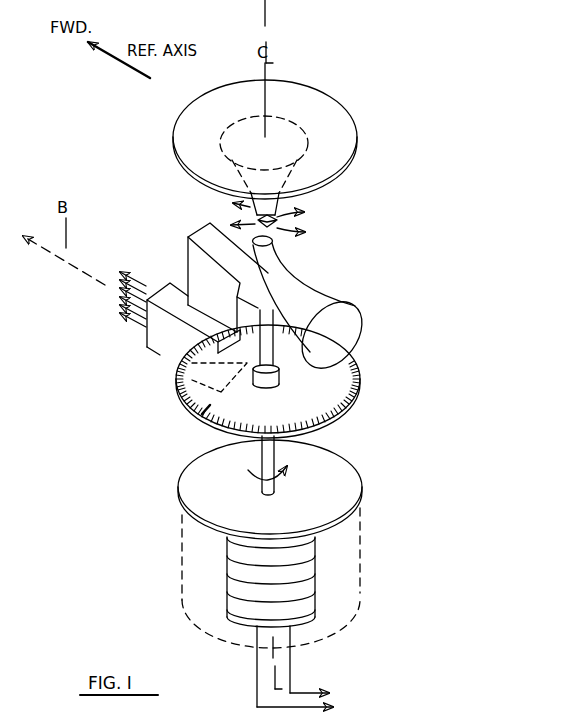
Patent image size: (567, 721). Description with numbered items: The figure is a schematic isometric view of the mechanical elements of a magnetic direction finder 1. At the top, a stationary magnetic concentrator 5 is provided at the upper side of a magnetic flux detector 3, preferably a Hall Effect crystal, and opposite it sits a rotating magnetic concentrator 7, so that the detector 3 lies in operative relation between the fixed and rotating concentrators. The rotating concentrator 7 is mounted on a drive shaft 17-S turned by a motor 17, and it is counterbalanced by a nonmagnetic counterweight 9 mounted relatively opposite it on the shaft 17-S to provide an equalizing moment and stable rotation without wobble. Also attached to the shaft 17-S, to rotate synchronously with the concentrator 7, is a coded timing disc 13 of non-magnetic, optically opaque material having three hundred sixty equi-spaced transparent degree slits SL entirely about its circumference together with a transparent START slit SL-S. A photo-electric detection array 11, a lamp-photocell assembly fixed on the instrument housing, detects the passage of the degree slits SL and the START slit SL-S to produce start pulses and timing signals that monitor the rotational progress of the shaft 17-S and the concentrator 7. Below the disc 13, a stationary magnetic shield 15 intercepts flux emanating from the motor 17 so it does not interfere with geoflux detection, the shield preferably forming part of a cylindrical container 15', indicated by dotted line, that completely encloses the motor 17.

The magnetic direction finder 1 is at (360, 226).
The magnetic flux detector 3 is at (290, 224).
The stationary magnetic concentrator 5 is at (327, 110).
The rotating magnetic concentrator 7 is at (311, 308).
The nonmagnetic counterweight 9 is at (202, 262).
The photo-electric detection array 11 is at (155, 327).
The timing disc 13 is at (276, 402).
The magnetic shield 15 is at (290, 489).
The cylindrical container 15' is at (236, 578).
The motor 17 is at (307, 613).
The drive shaft 17-S is at (265, 443).
The degree slits SL is at (360, 398).
The START slit SL-S is at (180, 403).